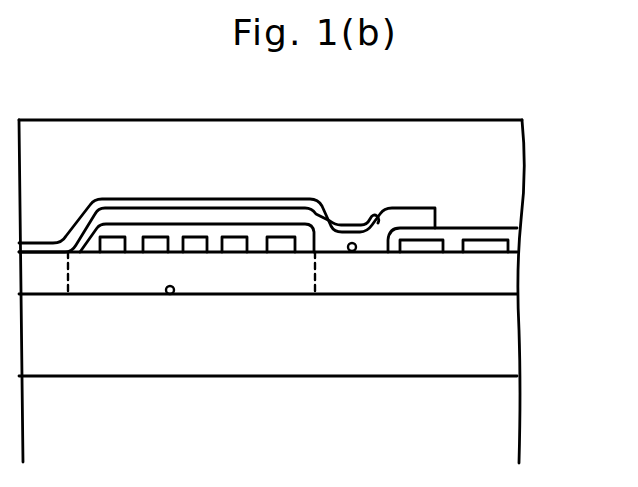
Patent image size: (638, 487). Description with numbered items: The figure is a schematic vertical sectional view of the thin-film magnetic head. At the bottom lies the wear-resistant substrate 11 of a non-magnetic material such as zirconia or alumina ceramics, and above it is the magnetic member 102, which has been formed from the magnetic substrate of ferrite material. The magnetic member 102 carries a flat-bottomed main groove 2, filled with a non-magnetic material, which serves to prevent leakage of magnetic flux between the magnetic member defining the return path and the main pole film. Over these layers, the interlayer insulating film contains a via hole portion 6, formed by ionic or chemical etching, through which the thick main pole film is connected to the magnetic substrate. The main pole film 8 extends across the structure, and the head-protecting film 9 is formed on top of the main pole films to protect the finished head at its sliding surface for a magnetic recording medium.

The head-protecting film 9 is at (203, 130).
The main pole film 8 is at (287, 200).
The via hole portion 6 is at (352, 252).
The main groove 2 is at (177, 294).
The magnetic member 102 is at (508, 329).
The wear-resistant substrate 11 is at (498, 442).